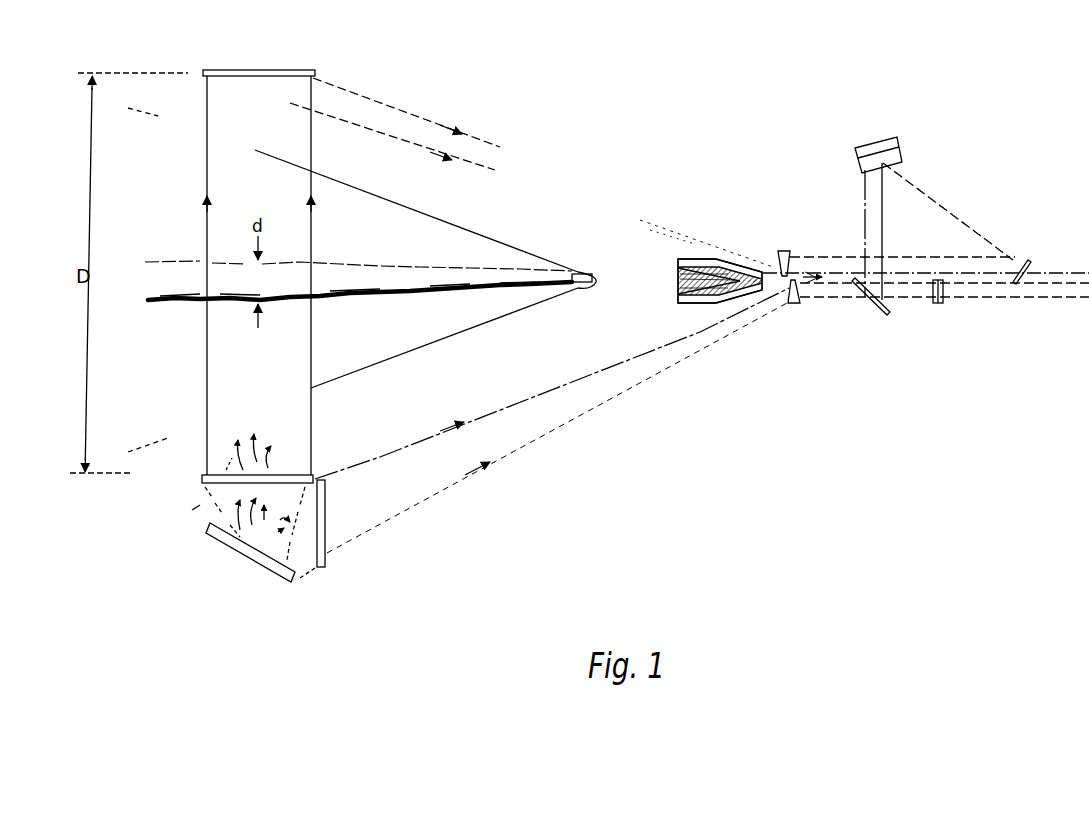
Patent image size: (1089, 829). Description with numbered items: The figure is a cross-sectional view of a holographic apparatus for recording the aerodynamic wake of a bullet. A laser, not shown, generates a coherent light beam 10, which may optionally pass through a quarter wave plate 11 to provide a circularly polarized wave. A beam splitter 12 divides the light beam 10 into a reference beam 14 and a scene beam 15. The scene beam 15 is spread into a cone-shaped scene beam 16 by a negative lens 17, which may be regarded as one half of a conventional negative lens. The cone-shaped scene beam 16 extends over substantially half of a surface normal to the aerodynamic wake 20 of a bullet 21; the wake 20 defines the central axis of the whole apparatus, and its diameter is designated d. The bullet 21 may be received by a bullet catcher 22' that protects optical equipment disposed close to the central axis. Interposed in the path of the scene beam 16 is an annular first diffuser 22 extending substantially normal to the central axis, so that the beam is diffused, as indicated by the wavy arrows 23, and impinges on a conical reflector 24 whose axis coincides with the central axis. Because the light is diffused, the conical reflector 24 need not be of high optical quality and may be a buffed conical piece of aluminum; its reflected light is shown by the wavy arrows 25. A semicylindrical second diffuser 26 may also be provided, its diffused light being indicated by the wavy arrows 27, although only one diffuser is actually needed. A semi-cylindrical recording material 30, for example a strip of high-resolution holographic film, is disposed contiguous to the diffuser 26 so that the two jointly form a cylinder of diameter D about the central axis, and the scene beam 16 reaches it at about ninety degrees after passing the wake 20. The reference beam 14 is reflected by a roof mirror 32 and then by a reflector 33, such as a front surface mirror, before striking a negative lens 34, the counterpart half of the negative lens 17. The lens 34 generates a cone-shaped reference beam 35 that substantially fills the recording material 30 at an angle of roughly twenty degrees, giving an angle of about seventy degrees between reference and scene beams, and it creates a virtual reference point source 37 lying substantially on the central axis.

The coherent light beam 10 is at (1062, 283).
The quarter wave plate 11 is at (943, 303).
The beam splitter 12 is at (893, 316).
The reference beam 14 is at (882, 205).
The scene beam 15 is at (843, 284).
The cone-shaped scene beam 16 is at (600, 367).
The negative lens 17 is at (795, 305).
The aerodynamic wake 20 is at (395, 264).
The bullet 21 is at (580, 272).
The first diffuser 22 is at (334, 535).
The bullet catcher 22' is at (699, 293).
The wavy arrows 23 is at (292, 555).
The conical reflector 24 is at (296, 584).
The wavy arrows 25 is at (227, 523).
The second diffuser 26 is at (195, 488).
The wavy arrows 27 is at (272, 427).
The recording material 30 is at (268, 68).
The roof mirror 32 is at (900, 143).
The reflector 33 is at (1020, 258).
The negative lens 34 is at (781, 249).
The cone-shaped reference beam 35 is at (517, 182).
The virtual reference point source 37 is at (808, 278).